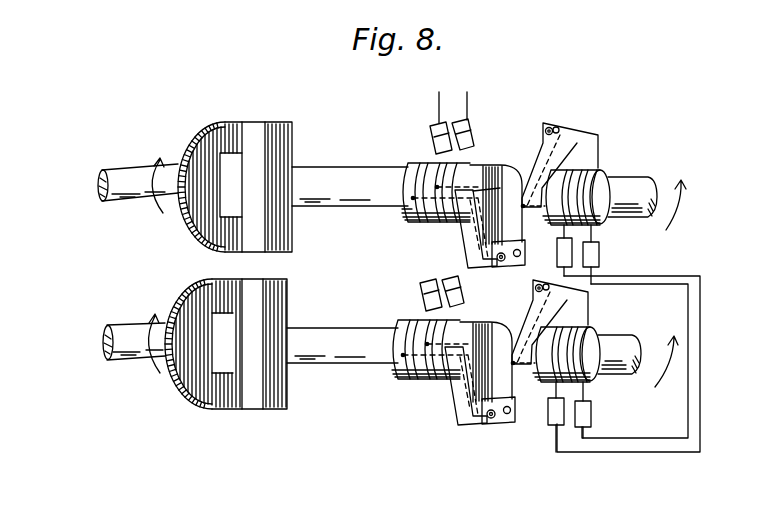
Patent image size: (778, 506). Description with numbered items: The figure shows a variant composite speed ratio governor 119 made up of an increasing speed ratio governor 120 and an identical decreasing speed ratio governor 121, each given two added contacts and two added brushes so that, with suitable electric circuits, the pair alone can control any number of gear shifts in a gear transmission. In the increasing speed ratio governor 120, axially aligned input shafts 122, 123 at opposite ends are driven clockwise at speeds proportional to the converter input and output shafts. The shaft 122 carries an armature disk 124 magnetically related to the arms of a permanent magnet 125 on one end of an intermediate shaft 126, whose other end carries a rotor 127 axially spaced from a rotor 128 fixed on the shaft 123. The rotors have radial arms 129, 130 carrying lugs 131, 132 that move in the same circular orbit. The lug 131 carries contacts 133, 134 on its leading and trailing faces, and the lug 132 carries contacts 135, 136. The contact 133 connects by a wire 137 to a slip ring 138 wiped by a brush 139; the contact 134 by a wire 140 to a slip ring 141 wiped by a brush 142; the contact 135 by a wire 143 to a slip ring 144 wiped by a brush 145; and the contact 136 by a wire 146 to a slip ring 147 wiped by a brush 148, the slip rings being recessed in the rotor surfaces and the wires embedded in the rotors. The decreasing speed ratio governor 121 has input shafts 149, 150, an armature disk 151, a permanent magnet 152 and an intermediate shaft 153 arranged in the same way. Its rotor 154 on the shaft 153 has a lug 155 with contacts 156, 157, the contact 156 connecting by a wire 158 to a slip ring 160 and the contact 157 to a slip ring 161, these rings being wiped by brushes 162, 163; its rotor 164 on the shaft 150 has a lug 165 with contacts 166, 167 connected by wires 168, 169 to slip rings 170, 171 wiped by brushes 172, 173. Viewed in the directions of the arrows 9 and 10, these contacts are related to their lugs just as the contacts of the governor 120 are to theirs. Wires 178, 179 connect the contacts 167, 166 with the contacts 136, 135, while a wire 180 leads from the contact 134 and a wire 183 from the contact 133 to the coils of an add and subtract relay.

The arrow 9 is at (545, 261).
The arrow 10 is at (605, 93).
The composite speed ratio governor 119 is at (99, 250).
The increasing speed ratio governor 120 is at (347, 123).
The decreasing speed ratio governor 121 is at (318, 411).
The input shaft 122 is at (158, 168).
The input shaft 123 is at (642, 177).
The armature disk 124 is at (210, 125).
The permanent magnet 125 is at (262, 123).
The intermediate shaft 126 is at (350, 186).
The rotor 127 is at (408, 220).
The rotor 128 is at (612, 226).
The radial arm 129 is at (462, 233).
The radial arm 130 is at (599, 140).
The lug 131 is at (526, 302).
The lug 132 is at (543, 123).
The contact 133 is at (500, 267).
The contact 134 is at (556, 251).
The contact 135 is at (575, 126).
The contact 136 is at (545, 132).
The wire 137 is at (468, 252).
The slip ring 138 is at (412, 166).
The brush 139 is at (432, 128).
The wire 140 is at (498, 182).
The slip ring 141 is at (470, 165).
The brush 142 is at (471, 124).
The wire 143 is at (590, 122).
The slip ring 144 is at (566, 170).
The brush 145 is at (600, 268).
The wire 146 is at (534, 213).
The slip ring 147 is at (612, 155).
The brush 148 is at (574, 252).
The input shaft 149 is at (138, 362).
The input shaft 150 is at (665, 367).
The armature disk 151 is at (184, 293).
The permanent magnet 152 is at (288, 298).
The intermediate shaft 153 is at (342, 345).
The rotor 154 is at (400, 379).
The lug 155 is at (495, 425).
The contact 156 is at (482, 428).
The contact 157 is at (511, 424).
The wire 158 is at (446, 381).
The slip ring 160 is at (414, 382).
The slip ring 161 is at (426, 383).
The brush 162 is at (421, 302).
The brush 163 is at (463, 301).
The rotor 164 is at (603, 381).
The lug 165 is at (536, 300).
The contact 166 is at (588, 300).
The contact 167 is at (536, 287).
The wire 168 is at (596, 320).
The wire 169 is at (507, 381).
The slip ring 170 is at (552, 384).
The slip ring 171 is at (620, 338).
The brush 172 is at (552, 433).
The brush 173 is at (593, 413).
The wire 178 is at (667, 443).
The wire 179 is at (680, 453).
The wire 180 is at (467, 92).
The wire 183 is at (439, 92).